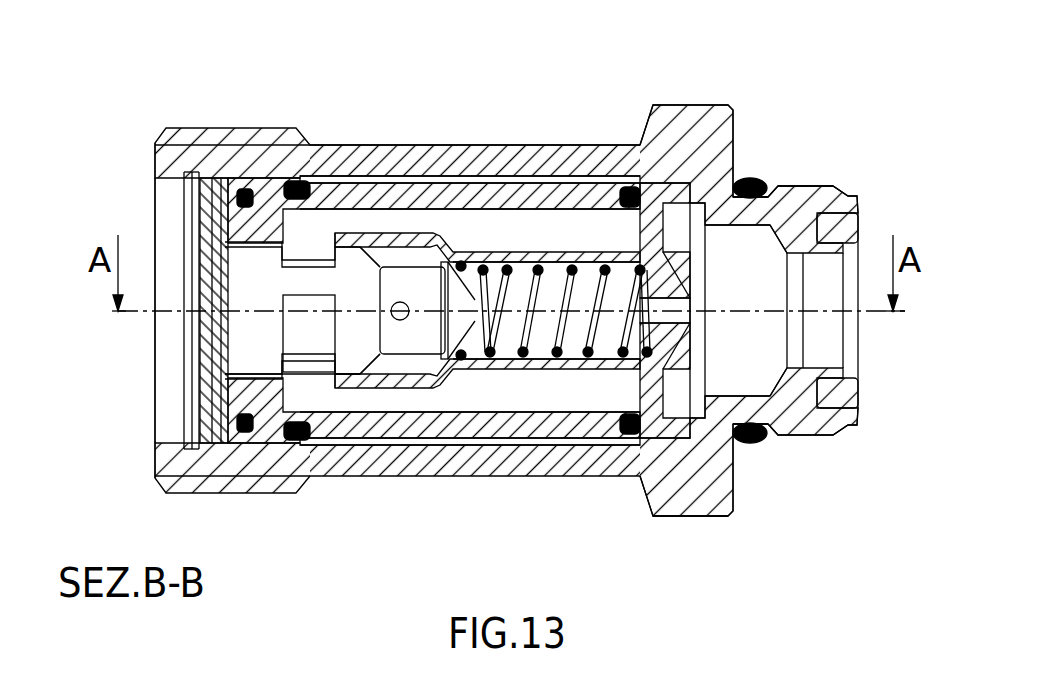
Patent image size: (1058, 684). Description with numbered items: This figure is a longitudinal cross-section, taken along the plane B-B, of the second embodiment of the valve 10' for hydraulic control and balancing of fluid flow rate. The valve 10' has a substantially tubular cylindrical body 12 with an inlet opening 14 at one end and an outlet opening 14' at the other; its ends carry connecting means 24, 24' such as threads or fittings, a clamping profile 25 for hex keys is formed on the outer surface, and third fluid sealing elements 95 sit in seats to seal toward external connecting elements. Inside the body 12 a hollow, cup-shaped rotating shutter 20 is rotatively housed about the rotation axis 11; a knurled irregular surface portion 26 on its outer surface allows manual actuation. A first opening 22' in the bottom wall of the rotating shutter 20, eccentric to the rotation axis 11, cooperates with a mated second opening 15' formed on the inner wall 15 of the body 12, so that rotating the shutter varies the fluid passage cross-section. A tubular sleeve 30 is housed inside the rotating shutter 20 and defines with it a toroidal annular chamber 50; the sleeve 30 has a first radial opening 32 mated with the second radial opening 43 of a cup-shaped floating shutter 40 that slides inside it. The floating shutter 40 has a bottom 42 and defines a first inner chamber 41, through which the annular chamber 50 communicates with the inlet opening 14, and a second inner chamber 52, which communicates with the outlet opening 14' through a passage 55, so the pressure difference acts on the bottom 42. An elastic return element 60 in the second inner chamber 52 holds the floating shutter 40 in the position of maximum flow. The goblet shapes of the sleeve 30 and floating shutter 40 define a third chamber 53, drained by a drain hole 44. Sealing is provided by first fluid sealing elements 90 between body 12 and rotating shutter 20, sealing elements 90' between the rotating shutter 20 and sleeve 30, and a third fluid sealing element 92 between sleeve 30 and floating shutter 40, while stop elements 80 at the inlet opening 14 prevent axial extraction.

The valve 10' is at (475, 79).
The rotation axis 11 is at (138, 311).
The body 12 is at (712, 87).
The inlet opening 14 is at (116, 310).
The outlet opening 14' is at (851, 274).
The inner wall 15 is at (767, 255).
The second opening 15' is at (768, 324).
The rotating shutter 20 is at (504, 165).
The first opening 22' is at (665, 309).
The connecting means 24 is at (506, 277).
The connecting means 24' is at (840, 138).
The clamping profile 25 is at (693, 518).
The irregular surface portion 26 is at (415, 210).
The sleeve 30 is at (348, 409).
The first radial opening 32 is at (372, 280).
The floating shutter 40 is at (379, 382).
The first inner chamber 41 is at (240, 342).
The bottom 42 is at (508, 400).
The second radial opening 43 is at (320, 357).
The drain hole 44 is at (395, 302).
The annular chamber 50 is at (425, 208).
The second inner chamber 52 is at (548, 280).
The third chamber 53 is at (412, 378).
The passage 55 is at (690, 295).
The elastic return element 60 is at (580, 243).
The stop element 80 is at (185, 182).
The first fluid sealing element 90 is at (437, 372).
The second fluid sealing element 90' is at (211, 365).
The third fluid sealing element 92 is at (452, 386).
The third fluid sealing element 95 is at (850, 390).